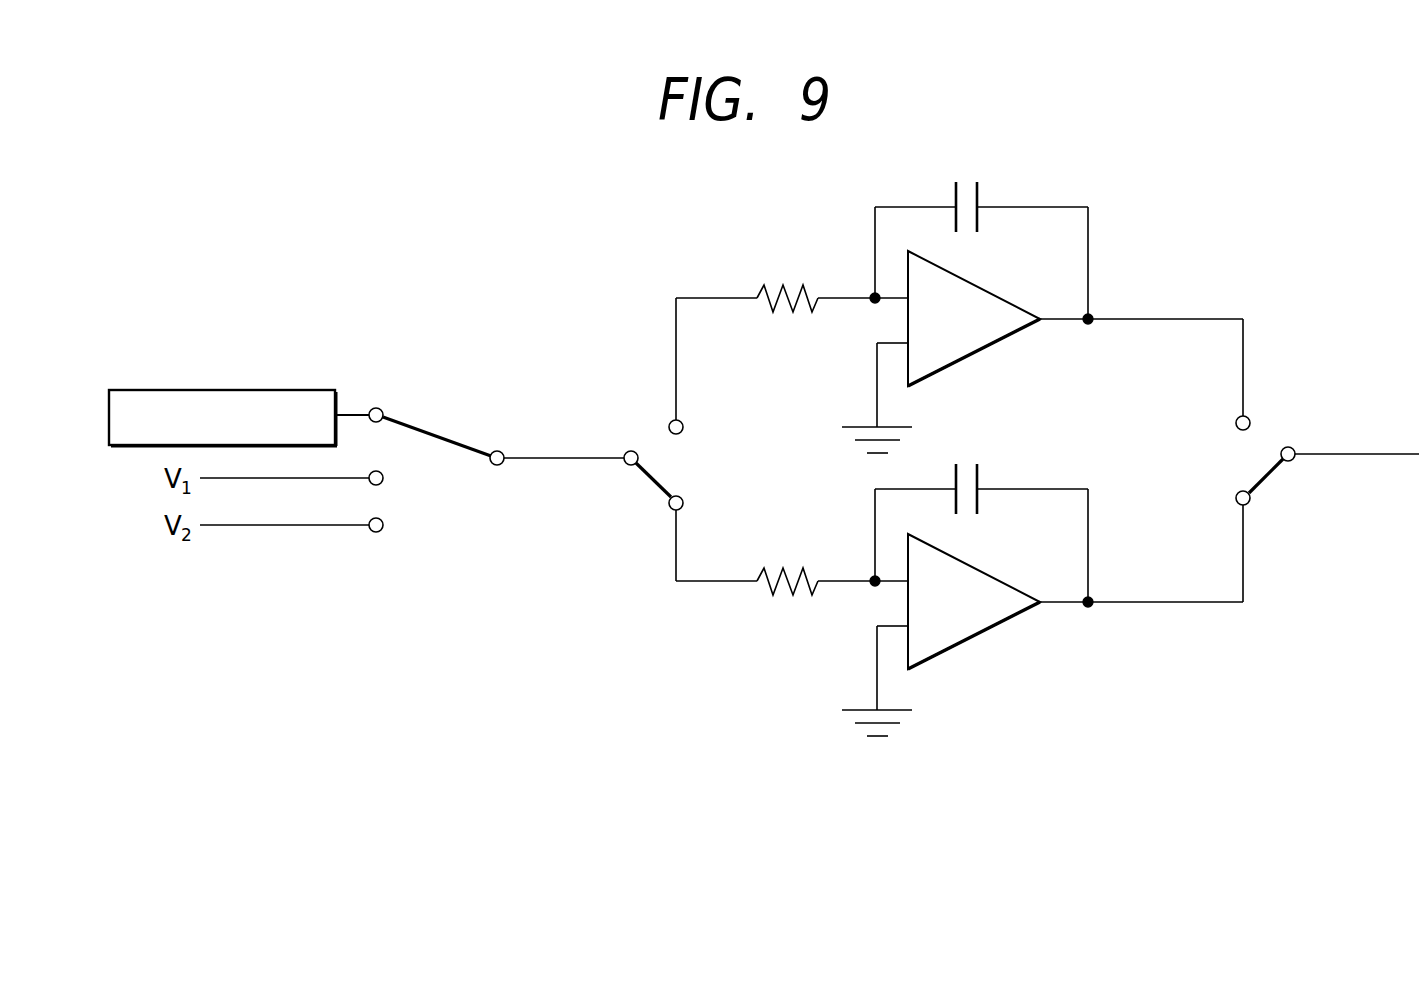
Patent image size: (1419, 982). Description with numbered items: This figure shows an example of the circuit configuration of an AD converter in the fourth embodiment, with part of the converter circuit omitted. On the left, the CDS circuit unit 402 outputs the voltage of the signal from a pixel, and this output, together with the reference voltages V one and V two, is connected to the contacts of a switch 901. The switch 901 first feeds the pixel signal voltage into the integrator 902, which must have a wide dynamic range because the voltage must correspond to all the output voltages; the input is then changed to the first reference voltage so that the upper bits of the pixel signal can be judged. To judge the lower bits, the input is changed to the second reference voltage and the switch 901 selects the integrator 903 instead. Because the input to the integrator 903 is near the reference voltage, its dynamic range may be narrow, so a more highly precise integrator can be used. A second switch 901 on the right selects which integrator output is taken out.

The CDS circuit unit 402 is at (250, 388).
The switch 901 is at (650, 438).
The integrator 902 is at (1000, 662).
The integrator 903 is at (1125, 245).